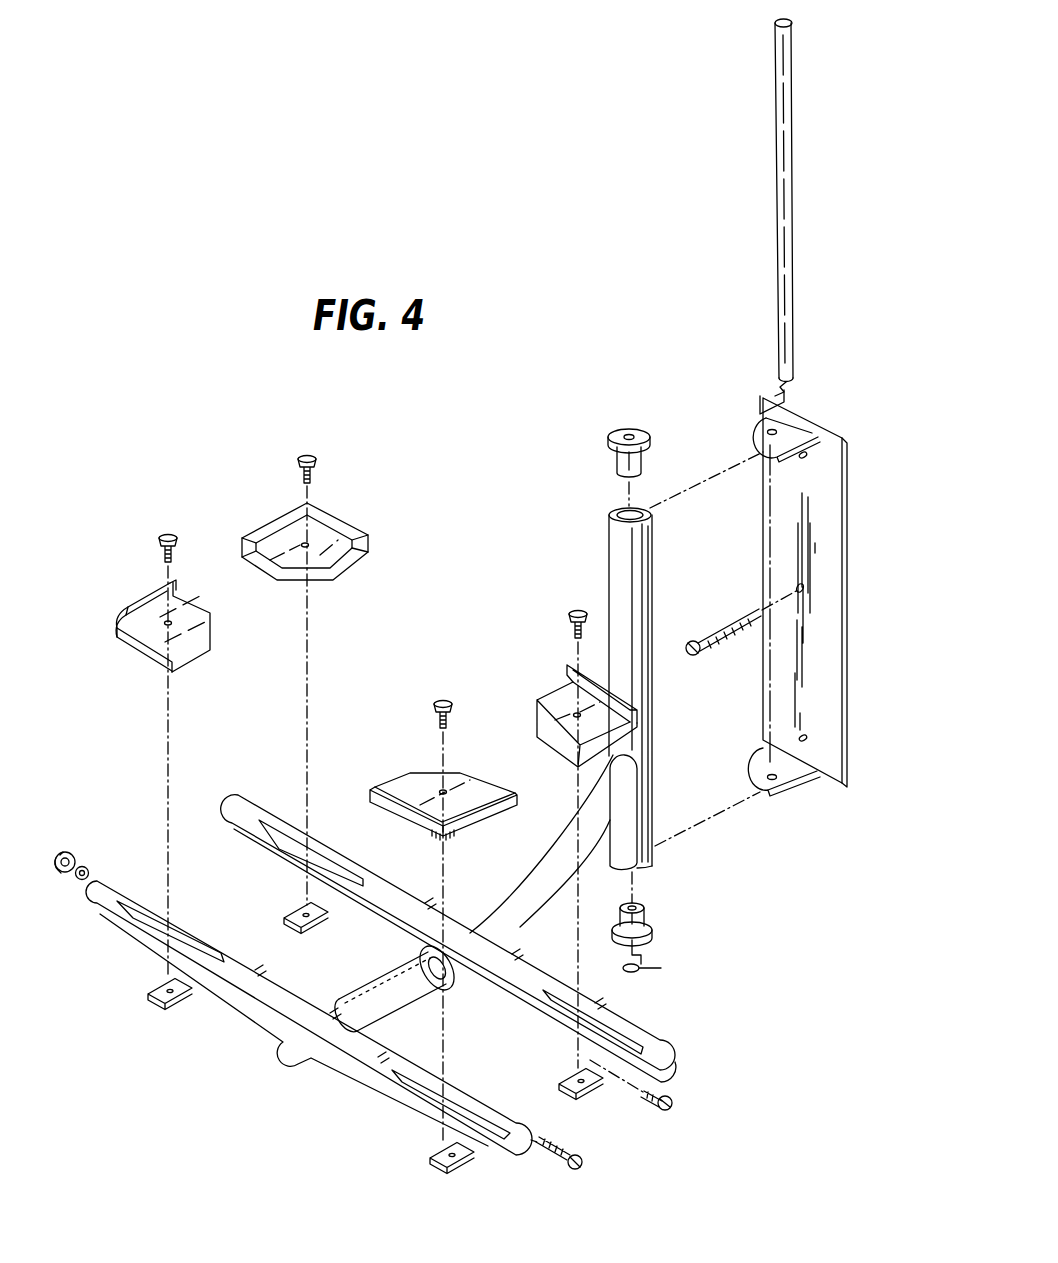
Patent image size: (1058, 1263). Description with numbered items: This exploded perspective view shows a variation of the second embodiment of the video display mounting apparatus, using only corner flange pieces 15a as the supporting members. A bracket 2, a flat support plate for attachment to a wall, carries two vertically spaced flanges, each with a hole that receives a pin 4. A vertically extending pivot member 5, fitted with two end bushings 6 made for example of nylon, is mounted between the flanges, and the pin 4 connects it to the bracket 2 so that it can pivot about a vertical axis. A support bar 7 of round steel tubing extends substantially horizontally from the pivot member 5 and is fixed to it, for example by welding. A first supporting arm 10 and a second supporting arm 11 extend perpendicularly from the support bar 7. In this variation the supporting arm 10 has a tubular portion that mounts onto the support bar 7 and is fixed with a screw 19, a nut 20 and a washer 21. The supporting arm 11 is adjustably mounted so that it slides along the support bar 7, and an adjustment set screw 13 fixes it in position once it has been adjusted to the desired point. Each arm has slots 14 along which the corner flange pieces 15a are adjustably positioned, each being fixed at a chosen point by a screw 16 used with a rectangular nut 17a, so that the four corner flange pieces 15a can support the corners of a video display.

The bracket 2 is at (763, 578).
The pin 4 is at (776, 198).
The vertically extending pivot member 5 is at (608, 537).
The end bushings 6 is at (618, 430).
The support bar 7 is at (398, 990).
The first supporting arm 10 is at (371, 1080).
The second supporting arm 11 is at (528, 955).
The adjustment set screw 13 is at (670, 1093).
The slots 14 is at (313, 853).
The corner flange pieces 15a is at (367, 527).
The screw 16 is at (312, 462).
The rectangular nut 17a is at (312, 917).
The screw 19 is at (582, 1160).
The nut 20 is at (67, 850).
The washer 21 is at (90, 866).